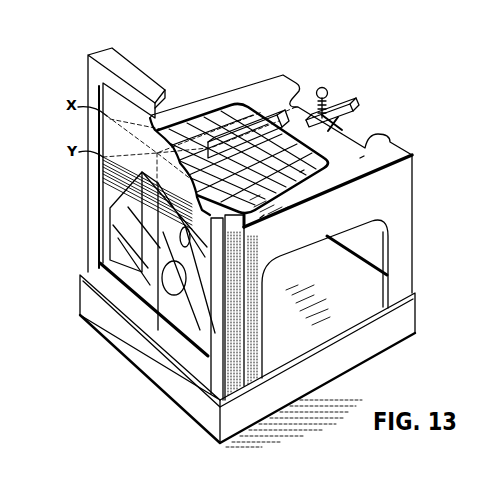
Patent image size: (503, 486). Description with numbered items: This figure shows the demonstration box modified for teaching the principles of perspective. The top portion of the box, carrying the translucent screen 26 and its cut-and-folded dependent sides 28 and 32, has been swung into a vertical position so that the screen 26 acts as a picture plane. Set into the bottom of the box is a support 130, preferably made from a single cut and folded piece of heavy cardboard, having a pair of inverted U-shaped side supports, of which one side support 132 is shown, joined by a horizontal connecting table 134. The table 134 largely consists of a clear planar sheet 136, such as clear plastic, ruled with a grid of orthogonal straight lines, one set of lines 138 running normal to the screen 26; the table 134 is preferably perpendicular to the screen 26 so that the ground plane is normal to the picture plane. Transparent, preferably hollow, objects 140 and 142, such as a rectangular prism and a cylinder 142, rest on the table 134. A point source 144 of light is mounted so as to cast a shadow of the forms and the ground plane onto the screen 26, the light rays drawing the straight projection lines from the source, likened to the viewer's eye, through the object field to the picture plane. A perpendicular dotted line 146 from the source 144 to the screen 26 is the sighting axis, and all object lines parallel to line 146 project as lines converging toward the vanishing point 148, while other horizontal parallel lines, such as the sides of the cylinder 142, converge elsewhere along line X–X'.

The sheet of translucent material 26 is at (107, 257).
The dependent side 28 is at (109, 50).
The dependent side 32 is at (247, 367).
The support 130 is at (426, 208).
The side support 132 is at (412, 263).
The table 134 is at (369, 147).
The clear planar sheet 136 is at (302, 171).
The set of lines 138 is at (262, 217).
The transparent object 140 is at (246, 100).
The transparent object 142 is at (363, 157).
The point source of light 144 is at (325, 87).
The perpendicular line 146 is at (201, 127).
The vanishing point 148 is at (160, 153).